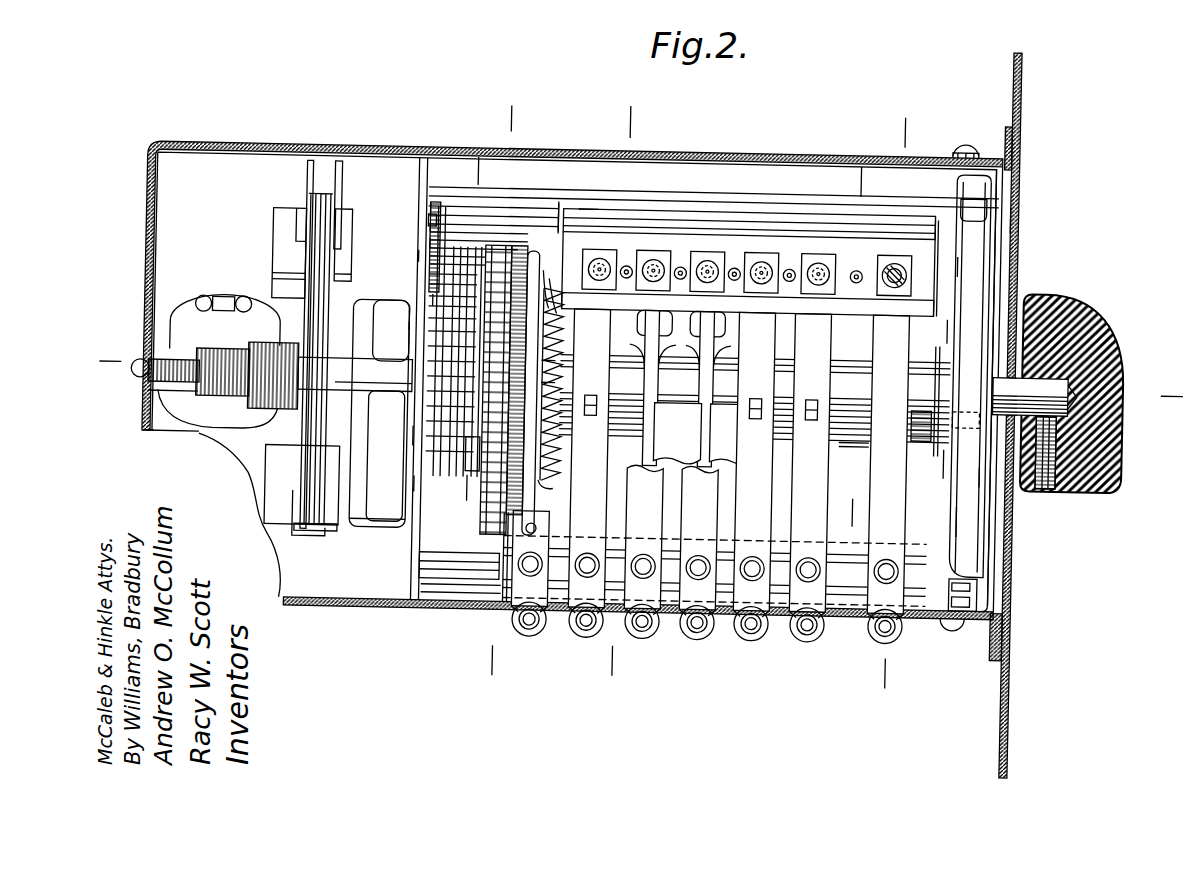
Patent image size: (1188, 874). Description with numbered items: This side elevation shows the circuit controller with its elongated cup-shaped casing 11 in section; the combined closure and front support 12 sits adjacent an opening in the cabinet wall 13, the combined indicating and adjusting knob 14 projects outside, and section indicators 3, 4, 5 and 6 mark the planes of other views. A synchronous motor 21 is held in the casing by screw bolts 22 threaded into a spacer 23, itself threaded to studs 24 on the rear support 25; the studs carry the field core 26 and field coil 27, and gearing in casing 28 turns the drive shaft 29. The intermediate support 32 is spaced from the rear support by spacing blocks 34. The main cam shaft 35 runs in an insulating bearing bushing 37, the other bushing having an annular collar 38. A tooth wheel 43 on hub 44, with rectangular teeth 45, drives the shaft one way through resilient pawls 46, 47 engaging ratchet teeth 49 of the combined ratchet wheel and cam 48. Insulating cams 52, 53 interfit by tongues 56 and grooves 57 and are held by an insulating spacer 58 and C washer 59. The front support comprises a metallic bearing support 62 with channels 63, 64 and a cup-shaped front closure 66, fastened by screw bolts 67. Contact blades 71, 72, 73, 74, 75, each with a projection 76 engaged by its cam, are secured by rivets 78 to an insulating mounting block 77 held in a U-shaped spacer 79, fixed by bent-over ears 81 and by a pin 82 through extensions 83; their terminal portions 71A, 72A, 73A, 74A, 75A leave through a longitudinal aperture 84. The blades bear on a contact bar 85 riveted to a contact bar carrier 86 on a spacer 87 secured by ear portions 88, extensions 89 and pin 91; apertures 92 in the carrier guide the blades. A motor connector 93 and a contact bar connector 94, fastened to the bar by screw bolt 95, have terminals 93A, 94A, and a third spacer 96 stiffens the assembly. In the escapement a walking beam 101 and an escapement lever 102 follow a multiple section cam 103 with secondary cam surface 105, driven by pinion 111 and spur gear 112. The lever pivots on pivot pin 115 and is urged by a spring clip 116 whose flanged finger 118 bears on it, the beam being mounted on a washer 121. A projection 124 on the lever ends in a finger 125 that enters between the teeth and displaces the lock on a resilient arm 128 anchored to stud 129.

The section line 3- 3 is at (115, 376).
The section line 4- 4 is at (489, 114).
The section line 5- 5 is at (476, 166).
The section line 6- 6 is at (616, 115).
The casing 11 is at (213, 141).
The combined closure and front support 12 is at (880, 117).
The wall 13 is at (1012, 652).
The combined indicating and adjusting knob 14 is at (1129, 347).
The self-starting synchronous motor 21 is at (174, 238).
The screw bolts 22 is at (141, 352).
The spacer 23 is at (158, 396).
The studs 24 is at (279, 376).
The rear support 25 is at (420, 526).
The field core 26 is at (288, 340).
The field coil 27 is at (196, 300).
The casing 28 is at (347, 524).
The drive shaft 29 is at (420, 442).
The intermediate support 32 is at (496, 455).
The spacing block 34 is at (426, 476).
The main cam shaft 35 is at (1020, 290).
The bearing bushing 37 is at (961, 380).
The annular collar 38 is at (418, 400).
The tooth wheel 43 is at (547, 280).
The hub 44 is at (548, 290).
The peripheral rectangular teeth 45 is at (494, 498).
The resilient pawl 46 is at (558, 372).
The resilient pawl 47 is at (566, 427).
The combined ratchet wheel and cam 48 is at (560, 454).
The lateral ratchet teeth 49 is at (556, 355).
The cam 52 is at (677, 434).
The cam 53 is at (733, 435).
The tongues 56 is at (702, 372).
The grooves 57 is at (641, 372).
The insulating spacer 58 is at (920, 408).
The C washer 59 is at (957, 426).
The bearing support 62 is at (992, 462).
The channel 63 is at (966, 252).
The channel 64 is at (979, 504).
The cup-shaped front closure 66 is at (1021, 202).
The screw bolts 67 is at (970, 138).
The contact blade 71 is at (589, 458).
The contact blade 72 is at (643, 537).
The contact blade 73 is at (698, 538).
The contact blade 74 is at (754, 461).
The contact blade 75 is at (810, 463).
The inwardly extending projection 76 is at (598, 408).
The mounting block 77 is at (490, 583).
The rivets 78 is at (808, 553).
The spacer 79 is at (447, 598).
The bent-over ears 81 is at (428, 576).
The pin 82 is at (986, 564).
The parallel extensions 83 is at (986, 586).
The longitudinal aperture 84 is at (514, 602).
The contact bar 85 is at (798, 250).
The contact bar carrier 86 is at (632, 224).
The spacer 87 is at (563, 208).
The bent-over ear portions 88 is at (428, 203).
The extensions 89 is at (986, 198).
The pin 91 is at (969, 186).
The apertures 92 is at (748, 303).
The motor connector 93 is at (552, 545).
The contact bar connector 94 is at (890, 430).
The screw bolt 95 is at (898, 252).
The third spacer 96 is at (858, 432).
The walking beam 101 is at (414, 320).
The escapement lever 102 is at (432, 274).
The multiple section cam 103 is at (414, 304).
The secondary cam surface 105 is at (432, 294).
The pinion 111 is at (419, 428).
The spur gear 112 is at (414, 356).
The pivot pin 115 is at (430, 213).
The spring clip 116 is at (492, 193).
The flanged finger 118 is at (493, 209).
The washer 121 is at (425, 372).
The projection 124 is at (539, 245).
The finger 125 is at (591, 205).
The resilient arm 128 is at (428, 221).
The stud 129 is at (430, 238).
The terminal portion 71A is at (594, 629).
The terminal portion 72A is at (646, 637).
The terminal portion 73A is at (700, 636).
The terminal portion 74A is at (756, 637).
The terminal portion 75A is at (813, 638).
The terminal 93A is at (541, 630).
The terminal 94A is at (883, 639).